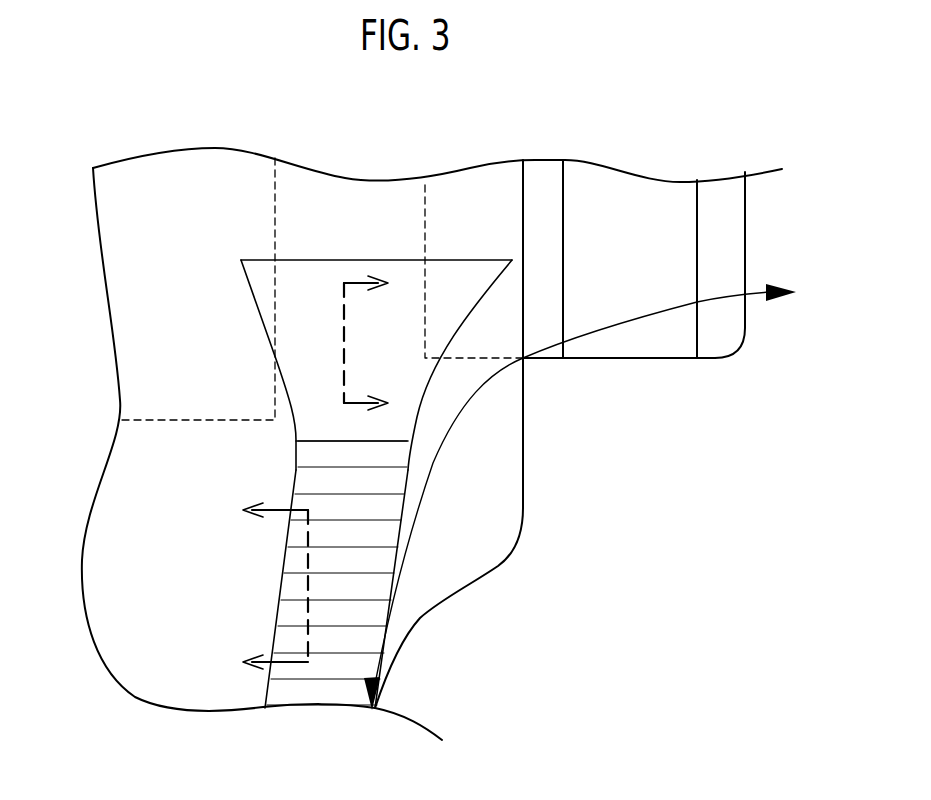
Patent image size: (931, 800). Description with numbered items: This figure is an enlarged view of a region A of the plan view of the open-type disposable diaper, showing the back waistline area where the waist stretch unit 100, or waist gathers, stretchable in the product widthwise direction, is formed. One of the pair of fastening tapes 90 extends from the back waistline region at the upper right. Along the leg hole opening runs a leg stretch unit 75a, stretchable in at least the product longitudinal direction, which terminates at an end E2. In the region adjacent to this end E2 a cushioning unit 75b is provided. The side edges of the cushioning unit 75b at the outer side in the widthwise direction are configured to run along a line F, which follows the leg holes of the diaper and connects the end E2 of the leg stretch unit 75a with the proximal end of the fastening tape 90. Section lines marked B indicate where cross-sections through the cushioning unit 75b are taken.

The waist stretch unit 100 is at (157, 198).
The fastening tape 90 is at (653, 337).
The cushioning unit 75b is at (263, 292).
The leg stretch unit 75a is at (370, 537).
The end of the leg stretch units E2 is at (395, 441).
The line along the leg holes F is at (652, 312).
The region A is at (264, 584).
The section line B- B is at (376, 344).